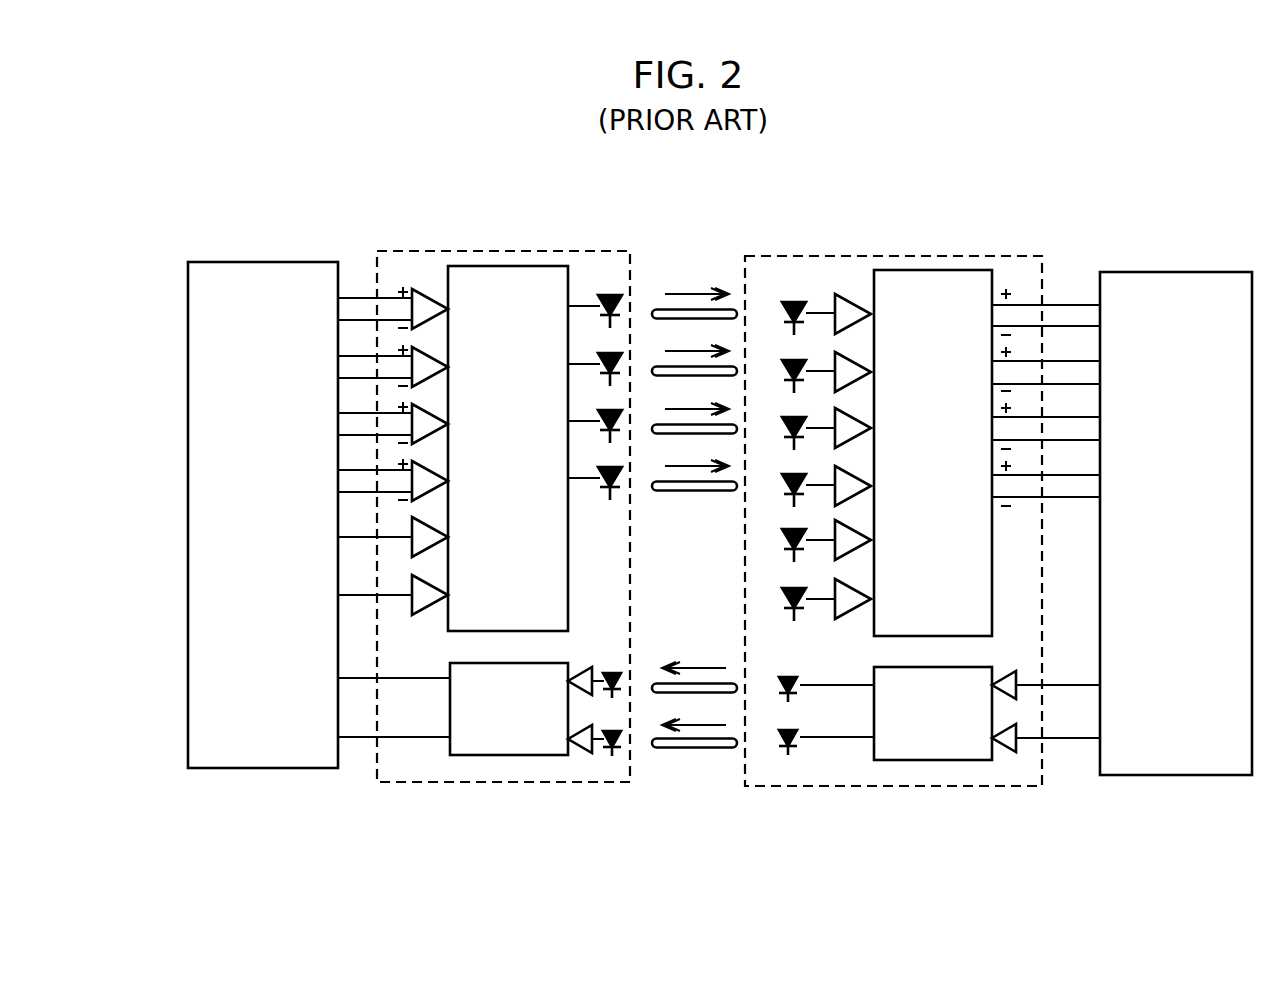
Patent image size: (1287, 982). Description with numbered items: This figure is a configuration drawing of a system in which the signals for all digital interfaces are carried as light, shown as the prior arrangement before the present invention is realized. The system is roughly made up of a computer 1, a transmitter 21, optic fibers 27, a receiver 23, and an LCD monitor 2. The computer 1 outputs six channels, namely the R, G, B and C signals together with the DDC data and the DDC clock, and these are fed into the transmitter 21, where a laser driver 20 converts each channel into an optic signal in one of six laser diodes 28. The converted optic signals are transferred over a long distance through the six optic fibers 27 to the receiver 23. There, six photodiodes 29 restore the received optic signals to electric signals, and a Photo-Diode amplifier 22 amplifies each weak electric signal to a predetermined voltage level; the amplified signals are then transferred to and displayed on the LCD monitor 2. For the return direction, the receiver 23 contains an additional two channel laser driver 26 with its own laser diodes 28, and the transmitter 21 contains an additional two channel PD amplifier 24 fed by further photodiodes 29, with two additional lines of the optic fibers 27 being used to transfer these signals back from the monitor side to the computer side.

The computer 1 is at (265, 753).
The LCD monitor 2 is at (1152, 762).
The laser driver 20 is at (510, 268).
The transmitter 21 is at (433, 250).
The Photo-Diode (PD) amplifier 22 is at (938, 285).
The receiver 23 is at (858, 255).
The two channel PD amplifier 24 is at (507, 745).
The two channel laser driver 26 is at (898, 745).
The optic fiber 27 is at (668, 312).
The laser diode 28 is at (606, 296).
The photodiode 29 is at (793, 304).